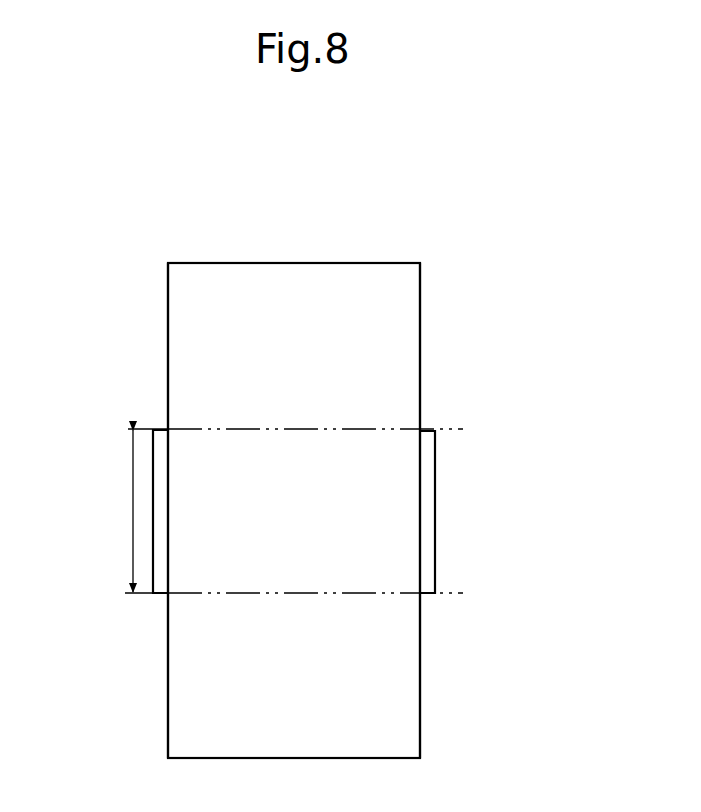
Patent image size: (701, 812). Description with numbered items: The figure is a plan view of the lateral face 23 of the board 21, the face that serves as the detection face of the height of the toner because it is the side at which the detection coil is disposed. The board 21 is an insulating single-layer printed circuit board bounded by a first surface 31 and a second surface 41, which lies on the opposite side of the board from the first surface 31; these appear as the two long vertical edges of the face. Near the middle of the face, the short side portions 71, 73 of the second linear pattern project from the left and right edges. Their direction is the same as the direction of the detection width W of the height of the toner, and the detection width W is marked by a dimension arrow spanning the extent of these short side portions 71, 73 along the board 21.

The board 21 is at (343, 261).
The lateral face 23 is at (250, 287).
The first surface 31 is at (168, 318).
The second surface 41 is at (421, 318).
The short side portion of the second linear pattern 71 is at (163, 587).
The short side portion of the second linear pattern 73 is at (427, 586).
The detection width W is at (133, 513).